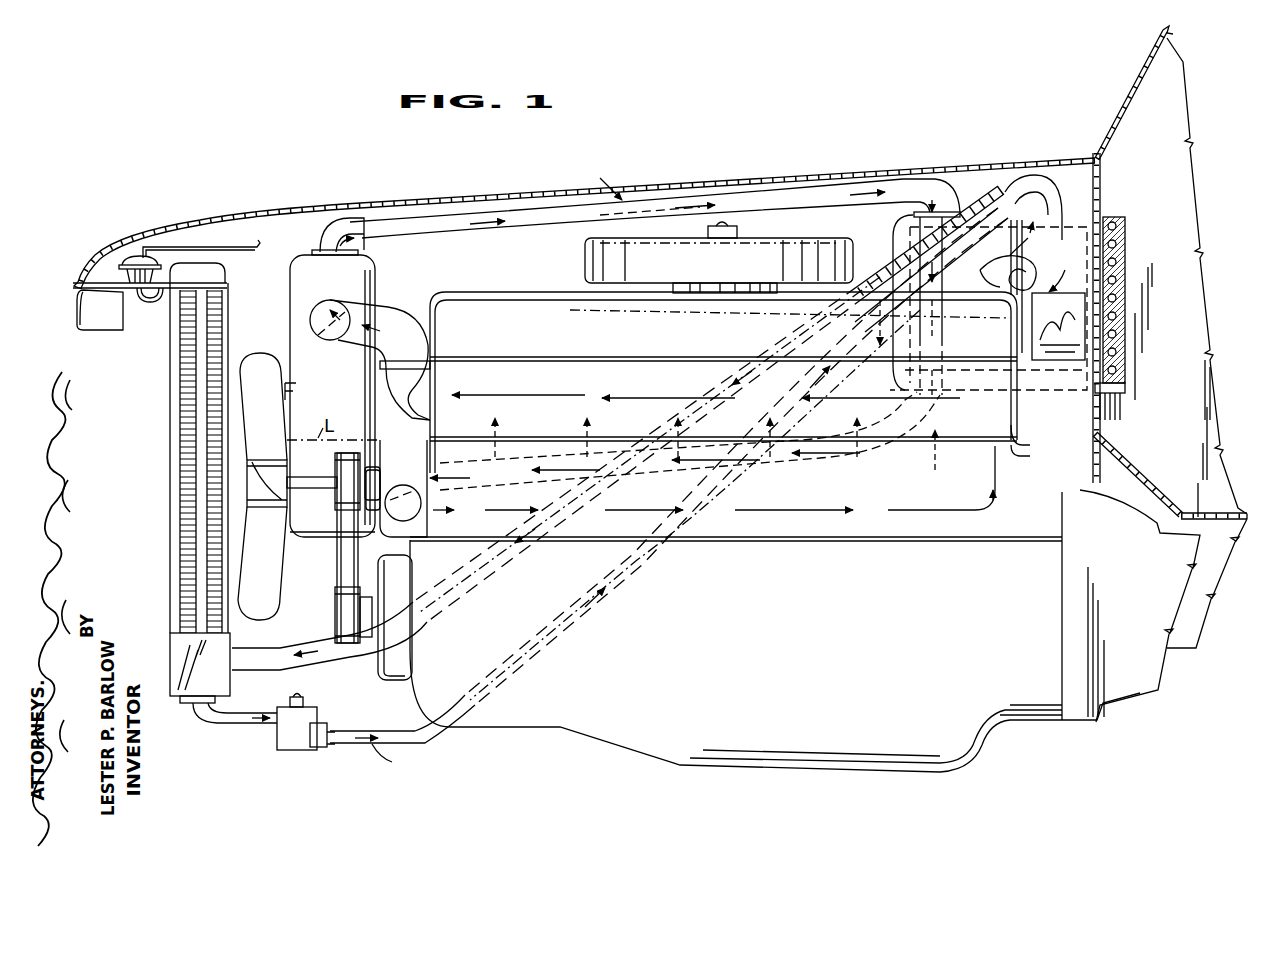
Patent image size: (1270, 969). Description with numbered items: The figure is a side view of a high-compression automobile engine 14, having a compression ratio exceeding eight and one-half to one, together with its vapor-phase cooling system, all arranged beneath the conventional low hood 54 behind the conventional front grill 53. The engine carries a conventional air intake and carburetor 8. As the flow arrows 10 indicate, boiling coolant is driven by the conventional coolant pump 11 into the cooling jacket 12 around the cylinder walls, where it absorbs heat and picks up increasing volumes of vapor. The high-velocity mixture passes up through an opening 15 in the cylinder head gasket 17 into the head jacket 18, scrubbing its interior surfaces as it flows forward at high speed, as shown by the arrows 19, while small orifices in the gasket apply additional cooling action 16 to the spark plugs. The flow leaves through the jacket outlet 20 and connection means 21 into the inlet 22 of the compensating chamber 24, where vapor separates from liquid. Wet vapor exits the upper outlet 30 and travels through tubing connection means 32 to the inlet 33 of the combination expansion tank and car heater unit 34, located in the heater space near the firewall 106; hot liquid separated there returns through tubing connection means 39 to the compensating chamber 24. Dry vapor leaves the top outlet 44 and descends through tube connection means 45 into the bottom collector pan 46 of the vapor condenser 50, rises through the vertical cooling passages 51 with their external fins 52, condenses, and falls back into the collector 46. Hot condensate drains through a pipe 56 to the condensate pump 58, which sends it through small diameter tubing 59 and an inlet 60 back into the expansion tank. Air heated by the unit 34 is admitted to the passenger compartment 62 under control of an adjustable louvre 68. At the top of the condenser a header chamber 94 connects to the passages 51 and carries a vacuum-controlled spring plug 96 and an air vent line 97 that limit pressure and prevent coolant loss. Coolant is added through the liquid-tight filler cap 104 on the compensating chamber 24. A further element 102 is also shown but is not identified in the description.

The air intake and carburetor 8 is at (583, 262).
The flow arrows 10 is at (492, 511).
The coolant pump 11 is at (412, 461).
The cooling jacket 12 is at (680, 502).
The high-compression automobile engine 14 is at (642, 728).
The opening 15 is at (1008, 440).
The additional cooling action 16 is at (585, 425).
The cylinder head gasket 17 is at (1028, 452).
The head jacket 18 is at (685, 390).
The high velocity flow 19 is at (570, 396).
The jacket outlet 20 is at (416, 408).
The connection means 21 is at (376, 312).
The inlet 22 is at (318, 318).
The compensating chamber 24 is at (286, 284).
The outlet 30 is at (366, 244).
The tubing connection means 32 is at (775, 182).
The inlet 33 is at (948, 195).
The combination expansion tank and car heater unit 34 is at (1068, 236).
The tubing connection means 39 is at (805, 470).
The top outlet 44 is at (1028, 190).
The tube connection means 45 is at (487, 583).
The bottom collector pan 46 is at (190, 640).
The vapor condenser 50 is at (174, 462).
The vertical cooling passages 51 is at (192, 470).
The external fins 52 is at (213, 497).
The front grill 53 is at (100, 322).
The low hood 54 is at (165, 224).
The pipe 56 is at (224, 723).
The condensate pump 58 is at (283, 738).
The small diameter tubing 59 is at (547, 668).
The inlet 60 is at (1028, 283).
The passenger compartment 62 is at (1195, 150).
The adjustable louvre 68 is at (1132, 260).
The header chamber 94 is at (216, 273).
The vacuum-controlled spring plug 96 is at (122, 262).
The air vent line 97 is at (150, 303).
The baffle plate 102 is at (215, 245).
The liquid-tight filler cap 104 is at (288, 386).
The firewall 106 is at (1100, 172).